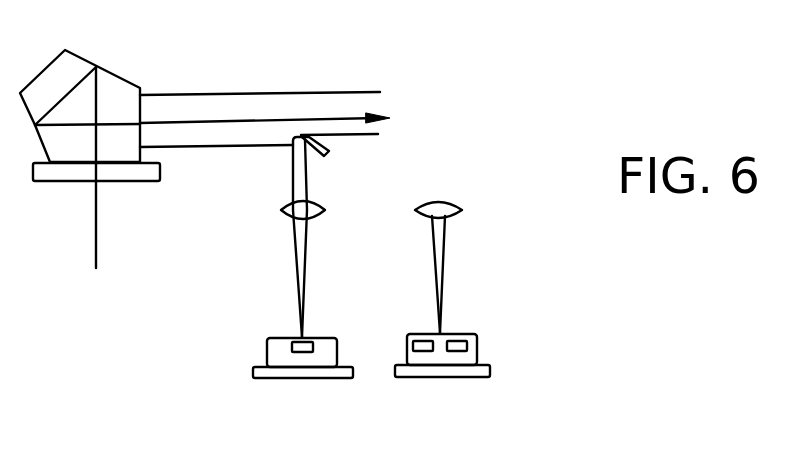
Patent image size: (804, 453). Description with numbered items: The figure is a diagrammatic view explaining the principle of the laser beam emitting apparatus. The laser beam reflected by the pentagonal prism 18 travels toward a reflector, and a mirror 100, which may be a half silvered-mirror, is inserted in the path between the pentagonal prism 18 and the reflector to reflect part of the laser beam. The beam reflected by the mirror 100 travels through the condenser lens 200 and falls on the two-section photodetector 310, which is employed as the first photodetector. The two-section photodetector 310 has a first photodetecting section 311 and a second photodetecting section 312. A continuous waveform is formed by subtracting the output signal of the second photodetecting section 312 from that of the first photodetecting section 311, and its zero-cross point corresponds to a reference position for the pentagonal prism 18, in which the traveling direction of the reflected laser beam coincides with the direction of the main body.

The pentagonal prism 18 is at (122, 78).
The mirror 100 is at (325, 154).
The condenser lens 200 is at (283, 208).
The two-section photodetector 310 is at (325, 378).
The first photodetecting section 311 is at (428, 335).
The second photodetecting section 312 is at (472, 347).